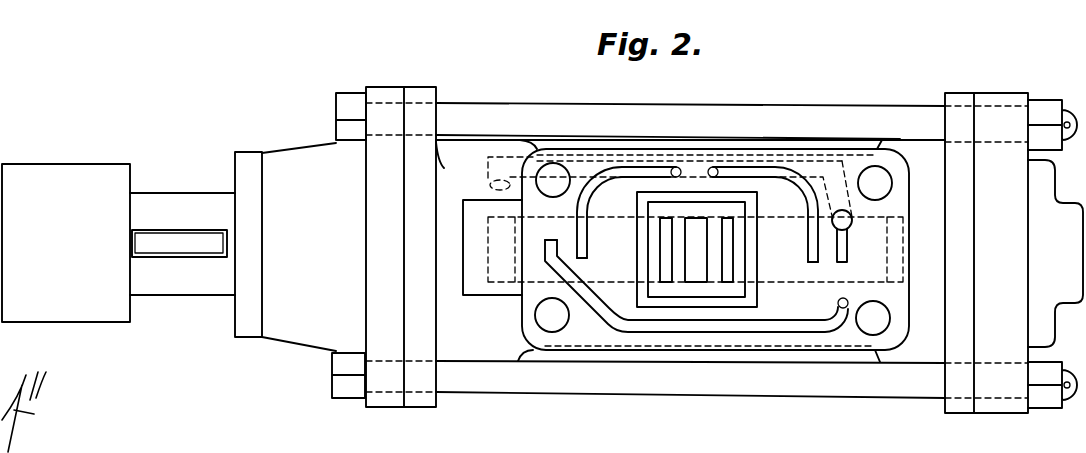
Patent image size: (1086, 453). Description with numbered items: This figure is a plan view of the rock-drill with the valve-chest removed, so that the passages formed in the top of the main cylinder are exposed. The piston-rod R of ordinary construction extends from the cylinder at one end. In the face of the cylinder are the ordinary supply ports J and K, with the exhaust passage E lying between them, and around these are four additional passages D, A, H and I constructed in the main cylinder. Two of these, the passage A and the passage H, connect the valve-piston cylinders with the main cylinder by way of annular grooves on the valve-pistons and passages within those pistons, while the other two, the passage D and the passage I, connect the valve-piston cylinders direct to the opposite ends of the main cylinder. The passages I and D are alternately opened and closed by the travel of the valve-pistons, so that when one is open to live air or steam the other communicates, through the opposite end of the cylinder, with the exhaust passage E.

The piston-rod R is at (179, 229).
The passage I is at (484, 174).
The passage D is at (546, 248).
The passage A is at (587, 247).
The passage H is at (808, 247).
The supply port J is at (666, 258).
The exhaust passage E is at (696, 250).
The supply port K is at (727, 260).